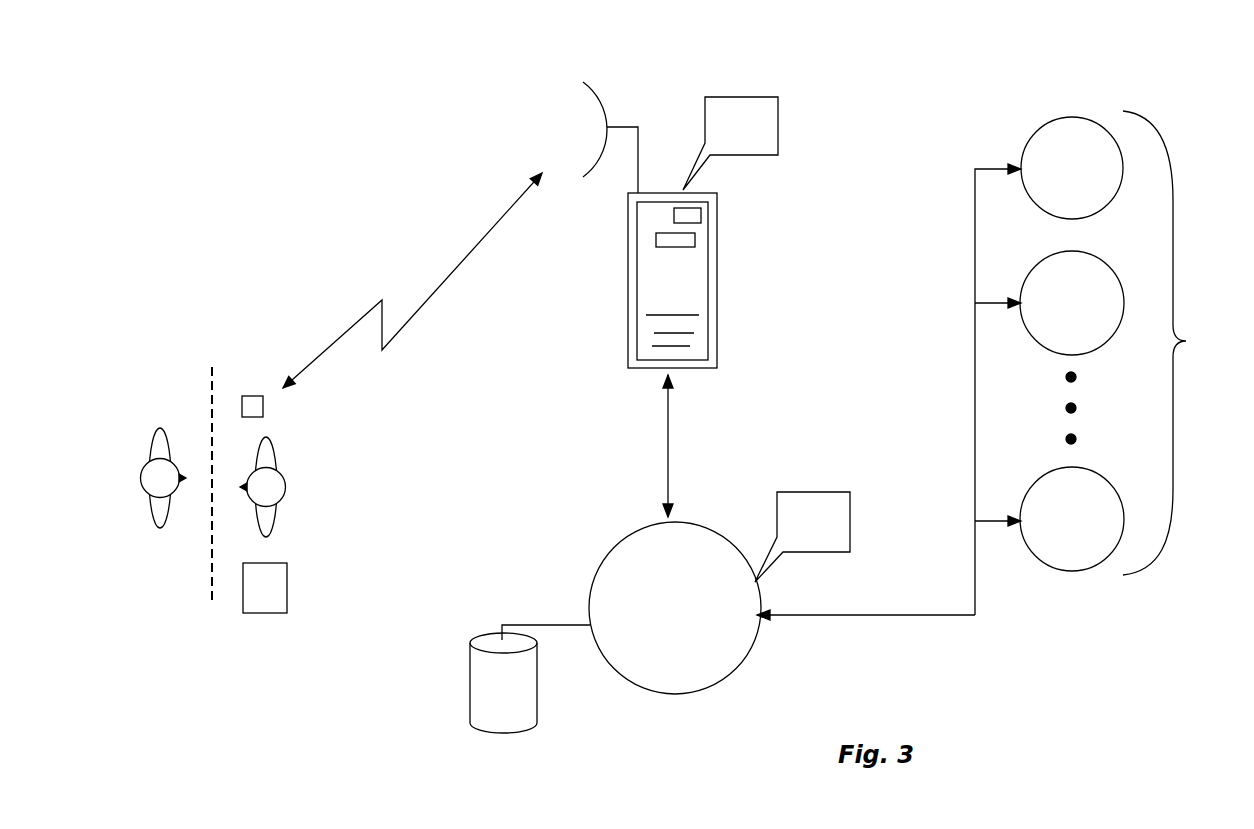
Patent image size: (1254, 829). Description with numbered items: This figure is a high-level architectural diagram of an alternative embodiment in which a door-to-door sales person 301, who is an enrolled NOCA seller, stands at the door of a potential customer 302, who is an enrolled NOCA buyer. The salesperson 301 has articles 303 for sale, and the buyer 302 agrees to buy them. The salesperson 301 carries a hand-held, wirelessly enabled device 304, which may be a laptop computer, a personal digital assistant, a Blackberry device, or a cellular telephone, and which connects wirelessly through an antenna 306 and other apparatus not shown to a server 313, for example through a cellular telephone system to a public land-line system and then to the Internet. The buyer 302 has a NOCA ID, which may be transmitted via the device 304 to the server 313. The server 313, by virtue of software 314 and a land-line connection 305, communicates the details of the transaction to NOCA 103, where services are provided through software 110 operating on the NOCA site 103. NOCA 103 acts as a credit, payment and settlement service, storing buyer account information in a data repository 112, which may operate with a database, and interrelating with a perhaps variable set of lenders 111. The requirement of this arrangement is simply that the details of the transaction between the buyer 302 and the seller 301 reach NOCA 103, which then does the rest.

The door-to-door sales person 301 is at (295, 483).
The potential customer 302 is at (138, 480).
The articles 303 is at (287, 573).
The hand-held wirelessly enabled device 304 is at (253, 395).
The land-line connection 305 is at (667, 430).
The antenna 306 is at (585, 73).
The server 313 is at (717, 303).
The software 314 is at (733, 97).
The NOCA site 103 is at (693, 535).
The software 110 is at (815, 492).
The data repository 112 is at (480, 688).
The lenders 111 is at (996, 365).